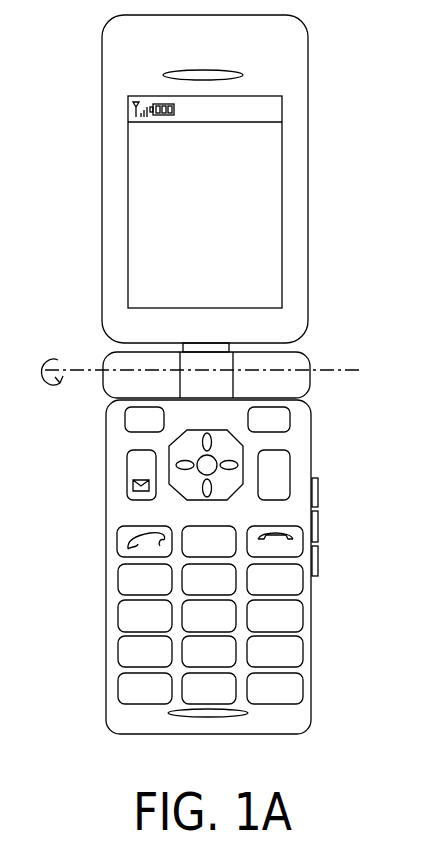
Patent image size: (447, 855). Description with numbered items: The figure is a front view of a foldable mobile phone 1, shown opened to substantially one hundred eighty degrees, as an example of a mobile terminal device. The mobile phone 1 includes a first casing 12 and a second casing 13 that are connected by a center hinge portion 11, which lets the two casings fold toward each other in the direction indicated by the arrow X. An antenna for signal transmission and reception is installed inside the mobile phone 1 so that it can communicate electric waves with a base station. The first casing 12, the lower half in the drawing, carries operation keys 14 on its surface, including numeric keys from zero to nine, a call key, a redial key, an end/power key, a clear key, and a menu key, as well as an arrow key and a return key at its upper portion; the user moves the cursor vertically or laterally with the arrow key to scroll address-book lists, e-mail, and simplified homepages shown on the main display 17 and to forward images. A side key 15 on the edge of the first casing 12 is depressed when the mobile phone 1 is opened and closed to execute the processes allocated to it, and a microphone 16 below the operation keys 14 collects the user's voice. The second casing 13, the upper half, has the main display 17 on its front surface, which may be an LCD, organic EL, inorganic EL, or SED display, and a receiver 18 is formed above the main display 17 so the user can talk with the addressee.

The mobile phone 1 is at (203, 396).
The center hinge portion 11 is at (310, 356).
The first casing 12 is at (312, 436).
The second casing 13 is at (235, 179).
The operation keys 14 is at (92, 420).
The side key 15 is at (332, 475).
The microphone 16 is at (247, 714).
The main display 17 is at (280, 235).
The receiver 18 is at (240, 72).